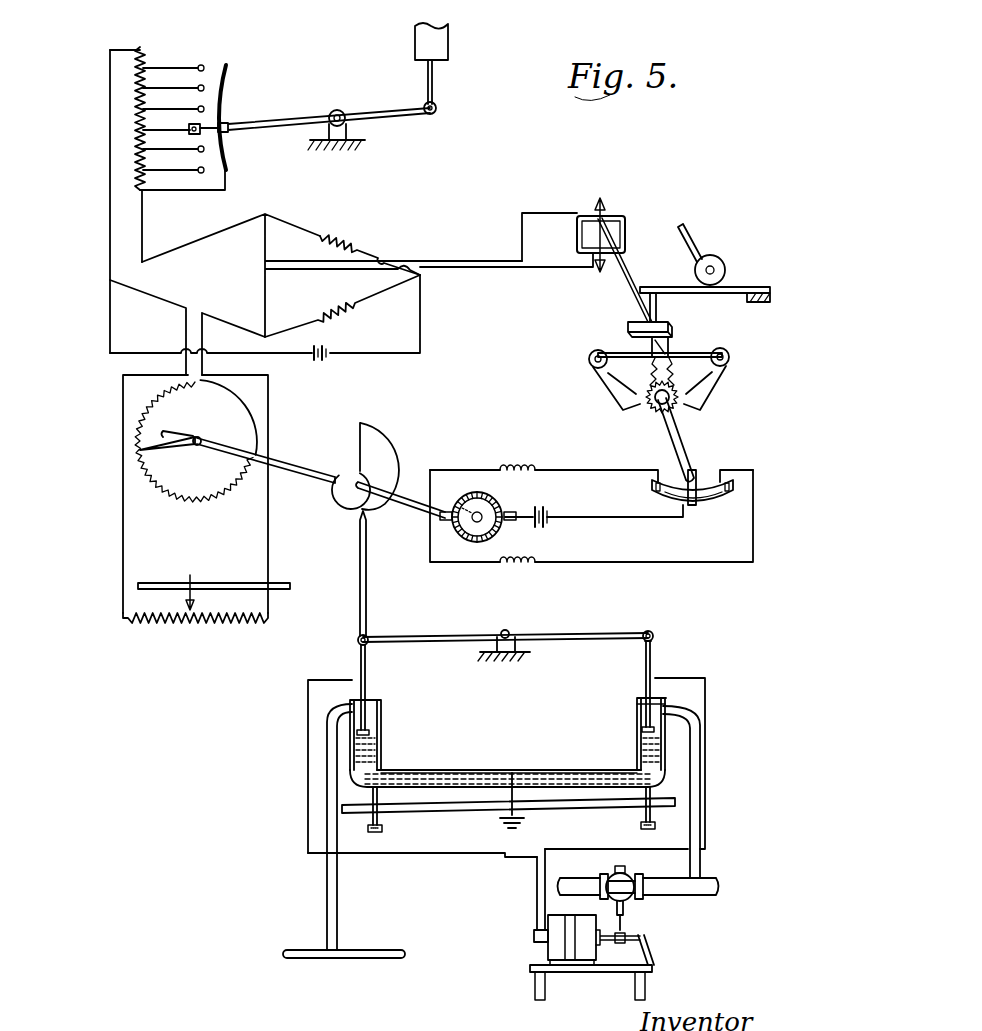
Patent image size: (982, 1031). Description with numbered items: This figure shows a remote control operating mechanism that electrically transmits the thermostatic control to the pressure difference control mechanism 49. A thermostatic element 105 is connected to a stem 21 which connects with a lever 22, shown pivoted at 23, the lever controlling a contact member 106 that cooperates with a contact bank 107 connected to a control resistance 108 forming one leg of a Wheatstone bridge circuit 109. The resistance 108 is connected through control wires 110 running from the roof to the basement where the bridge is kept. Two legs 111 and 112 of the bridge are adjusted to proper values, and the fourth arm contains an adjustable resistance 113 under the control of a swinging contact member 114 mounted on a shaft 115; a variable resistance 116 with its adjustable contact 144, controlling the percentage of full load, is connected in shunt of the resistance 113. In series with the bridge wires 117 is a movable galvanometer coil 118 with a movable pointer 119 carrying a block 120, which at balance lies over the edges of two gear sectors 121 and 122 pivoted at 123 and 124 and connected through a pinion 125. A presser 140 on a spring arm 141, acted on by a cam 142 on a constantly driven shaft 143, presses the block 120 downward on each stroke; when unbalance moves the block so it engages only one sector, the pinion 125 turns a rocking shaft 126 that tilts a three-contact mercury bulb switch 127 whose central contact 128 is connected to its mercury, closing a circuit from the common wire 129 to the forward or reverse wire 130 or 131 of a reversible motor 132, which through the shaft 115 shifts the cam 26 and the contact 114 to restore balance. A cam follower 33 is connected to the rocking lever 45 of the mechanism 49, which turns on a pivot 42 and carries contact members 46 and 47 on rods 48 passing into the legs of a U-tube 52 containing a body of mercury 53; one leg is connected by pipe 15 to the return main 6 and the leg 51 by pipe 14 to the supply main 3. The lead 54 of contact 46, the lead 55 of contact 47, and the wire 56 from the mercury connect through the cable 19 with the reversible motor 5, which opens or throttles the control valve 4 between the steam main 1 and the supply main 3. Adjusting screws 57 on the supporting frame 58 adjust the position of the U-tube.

The steam supply main 1 is at (566, 882).
The supply main 3 is at (680, 884).
The control valve 4 is at (641, 899).
The reversible motor 5 is at (540, 940).
The return main 6 is at (378, 950).
The pressure conveying tube 14 is at (707, 749).
The pressure conveying tube 15 is at (326, 758).
The cable 19 is at (528, 884).
The stem 21 is at (436, 86).
The lever 22 is at (296, 118).
The pivot 23 is at (350, 112).
The cam 26 is at (378, 442).
The cam follower 33 is at (366, 604).
The pivot 42 is at (512, 633).
The lever 45 is at (417, 639).
The contact member 46 is at (376, 733).
The contact member 47 is at (650, 731).
The rods 48 is at (368, 659).
The pressure difference control mechanism 49 is at (621, 628).
The leg or chamber 51 is at (639, 712).
The U-tube 52 is at (440, 770).
The body of mercury 53 is at (486, 770).
The lead 54 is at (308, 716).
The lead 55 is at (716, 778).
The wire 56 is at (516, 791).
The adjusting screws 57 is at (380, 829).
The supporting frame 58 is at (462, 812).
The thermostatic element 105 is at (414, 40).
The contact member 106 is at (229, 125).
The contact bank 107 is at (198, 52).
The control resistance 108 is at (143, 48).
The Wheatstone bridge circuit 109 is at (306, 226).
The control wires 110 is at (142, 233).
The leg 111 is at (353, 239).
The leg 112 is at (350, 312).
The adjustable resistance 113 is at (186, 499).
The swinging contact member 114 is at (166, 452).
The shaft 115 is at (218, 448).
The variable resistance 116 is at (169, 630).
The wires 117 is at (458, 263).
The movable galvanometer coil 118 is at (577, 232).
The movable pointer 119 is at (627, 283).
The block 120 is at (670, 338).
The gear sector 121 is at (610, 381).
The gear sector 122 is at (722, 390).
The pivot 123 is at (590, 366).
The pivot 124 is at (730, 358).
The pinion 125 is at (652, 405).
The rocking shaft 126 is at (694, 430).
The three contact mercury bulb switch 127 is at (722, 499).
The central contact 128 is at (685, 506).
The common wire 129 is at (597, 516).
The forward wire 130 is at (540, 472).
The reverse wire 131 is at (598, 564).
The reversible motor 132 is at (470, 536).
The presser or hammer member 140 is at (632, 324).
The spring arm 141 is at (740, 298).
The cam 142 is at (724, 268).
The shaft 143 is at (697, 251).
The adjustable contact 144 is at (192, 580).